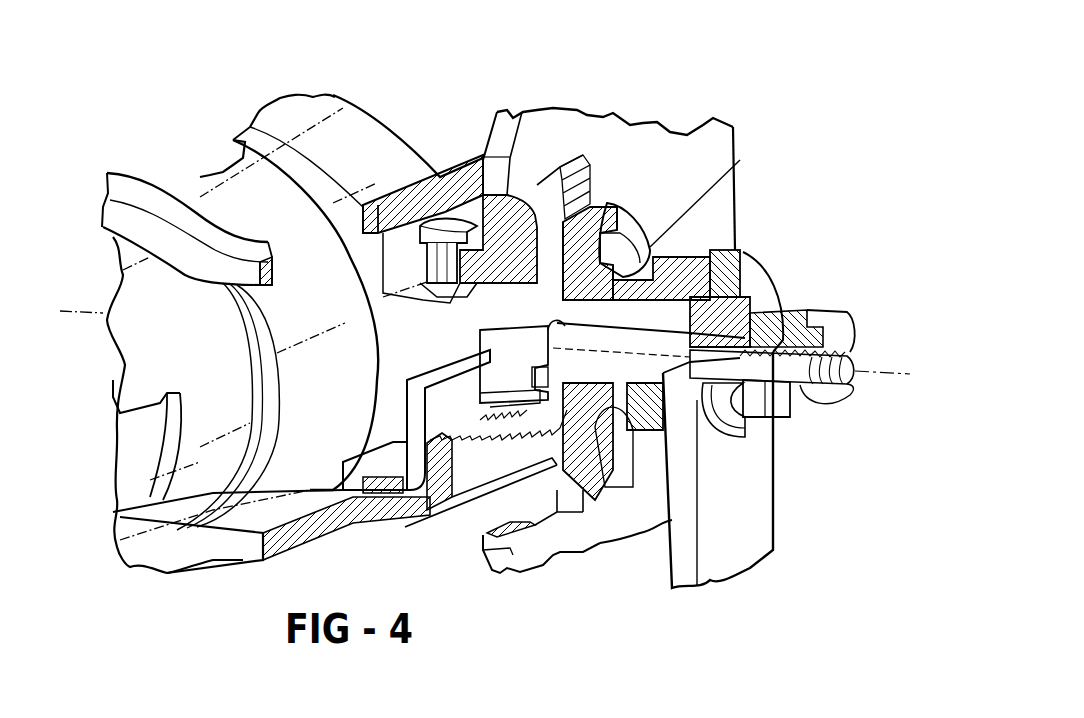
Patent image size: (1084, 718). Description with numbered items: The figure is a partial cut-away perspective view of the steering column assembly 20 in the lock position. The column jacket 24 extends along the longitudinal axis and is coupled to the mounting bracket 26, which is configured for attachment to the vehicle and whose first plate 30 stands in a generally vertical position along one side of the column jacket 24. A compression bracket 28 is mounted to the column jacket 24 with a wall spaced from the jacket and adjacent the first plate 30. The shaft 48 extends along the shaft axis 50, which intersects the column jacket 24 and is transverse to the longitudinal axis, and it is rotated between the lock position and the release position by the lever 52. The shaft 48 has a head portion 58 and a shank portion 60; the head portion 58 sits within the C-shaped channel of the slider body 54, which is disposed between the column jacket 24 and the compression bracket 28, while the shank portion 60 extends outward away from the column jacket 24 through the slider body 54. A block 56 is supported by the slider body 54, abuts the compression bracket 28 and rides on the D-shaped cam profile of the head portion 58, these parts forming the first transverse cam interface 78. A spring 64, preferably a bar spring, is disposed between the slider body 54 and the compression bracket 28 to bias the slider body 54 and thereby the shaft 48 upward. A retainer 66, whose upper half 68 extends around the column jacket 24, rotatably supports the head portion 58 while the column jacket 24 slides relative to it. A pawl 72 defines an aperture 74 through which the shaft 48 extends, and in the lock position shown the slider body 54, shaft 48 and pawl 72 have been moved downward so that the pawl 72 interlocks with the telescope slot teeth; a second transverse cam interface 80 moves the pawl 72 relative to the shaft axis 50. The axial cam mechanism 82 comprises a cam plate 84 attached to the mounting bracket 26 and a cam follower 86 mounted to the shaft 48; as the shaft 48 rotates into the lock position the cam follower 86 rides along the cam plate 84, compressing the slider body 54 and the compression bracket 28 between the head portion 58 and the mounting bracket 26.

The steering column assembly 20 is at (718, 78).
The column jacket 24 is at (140, 308).
The mounting bracket 26 is at (563, 125).
The compression bracket 28 is at (237, 547).
The first plate 30 is at (693, 270).
The shaft 48 is at (855, 378).
The shaft axis 50 is at (885, 362).
The lever 52 is at (772, 510).
The slider body 54 is at (493, 240).
The block 56 is at (438, 237).
The head portion 58 is at (420, 282).
The shank portion 60 is at (720, 213).
The spring 64 is at (387, 480).
The retainer 66 is at (325, 104).
The upper half 68 is at (340, 123).
The pawl 72 is at (500, 400).
The aperture 74 is at (632, 395).
The first transverse cam interface 78 is at (420, 272).
The second transverse cam interface 80 is at (565, 360).
The axial cam mechanism 82 is at (657, 217).
The cam plate 84 is at (627, 217).
The cam follower 86 is at (687, 267).